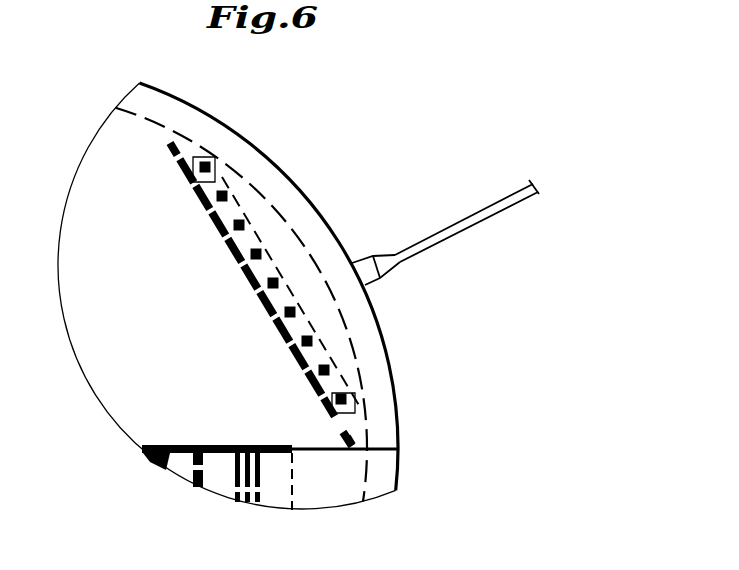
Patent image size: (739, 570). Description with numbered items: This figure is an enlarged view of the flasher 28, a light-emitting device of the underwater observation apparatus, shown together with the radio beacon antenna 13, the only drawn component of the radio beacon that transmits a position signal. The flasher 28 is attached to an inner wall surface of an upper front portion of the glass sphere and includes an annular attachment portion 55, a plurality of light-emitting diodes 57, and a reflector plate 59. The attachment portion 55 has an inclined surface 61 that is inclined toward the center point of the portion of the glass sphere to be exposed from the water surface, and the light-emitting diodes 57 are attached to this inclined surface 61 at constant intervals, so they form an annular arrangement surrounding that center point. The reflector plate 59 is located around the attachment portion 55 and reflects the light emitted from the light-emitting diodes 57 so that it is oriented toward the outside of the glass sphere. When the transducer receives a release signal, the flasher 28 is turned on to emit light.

The radio beacon antenna 13 is at (492, 205).
The flasher 28 is at (240, 290).
The attachment portion 55 is at (313, 325).
The light-emitting diodes 57 is at (263, 252).
The reflector plate 59 is at (350, 437).
The inclined surface 61 is at (312, 363).